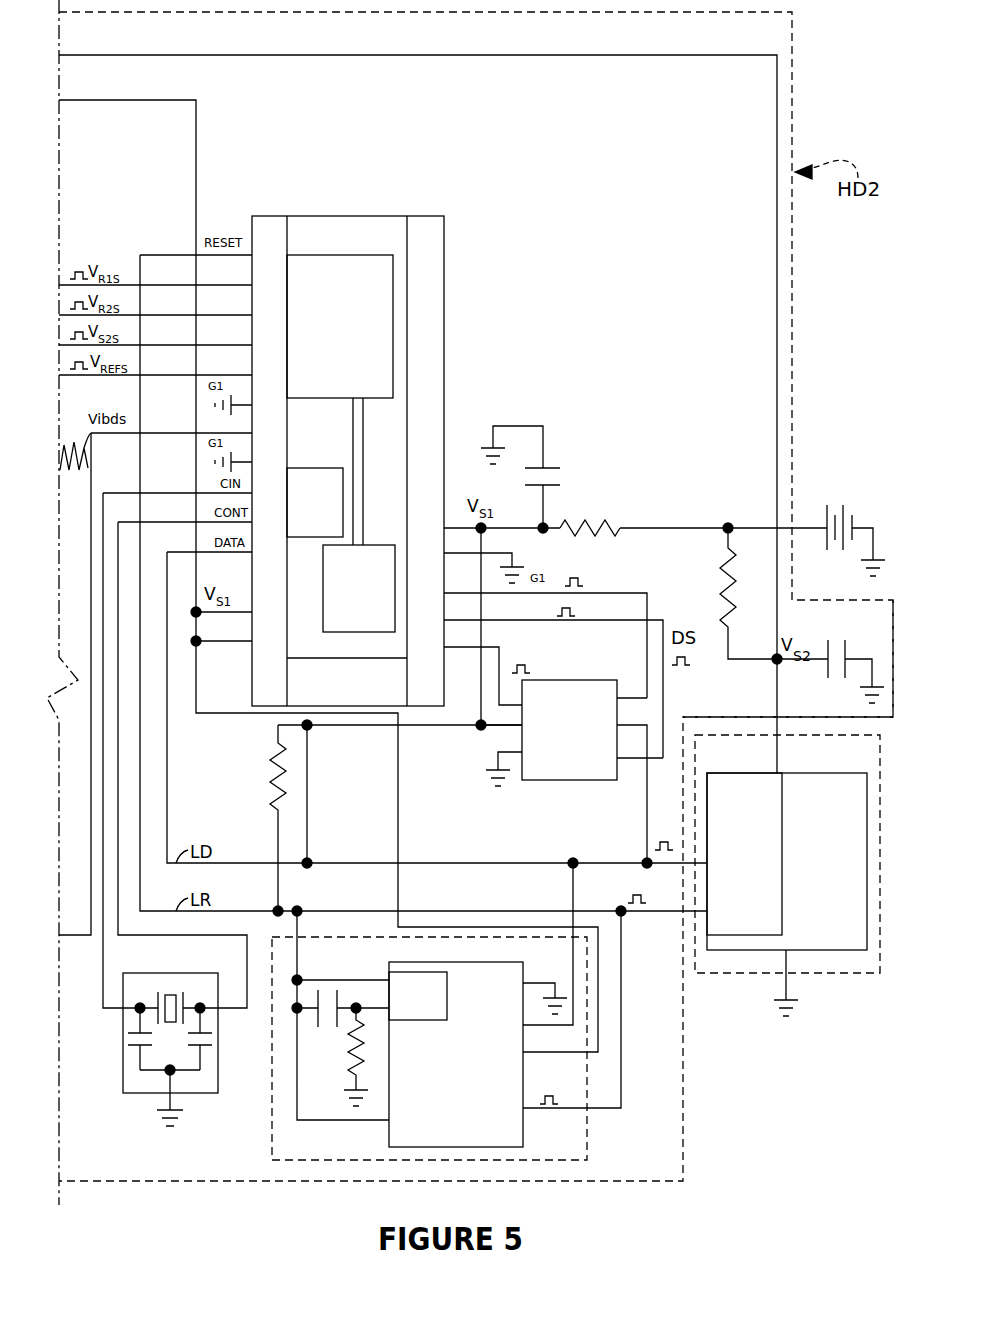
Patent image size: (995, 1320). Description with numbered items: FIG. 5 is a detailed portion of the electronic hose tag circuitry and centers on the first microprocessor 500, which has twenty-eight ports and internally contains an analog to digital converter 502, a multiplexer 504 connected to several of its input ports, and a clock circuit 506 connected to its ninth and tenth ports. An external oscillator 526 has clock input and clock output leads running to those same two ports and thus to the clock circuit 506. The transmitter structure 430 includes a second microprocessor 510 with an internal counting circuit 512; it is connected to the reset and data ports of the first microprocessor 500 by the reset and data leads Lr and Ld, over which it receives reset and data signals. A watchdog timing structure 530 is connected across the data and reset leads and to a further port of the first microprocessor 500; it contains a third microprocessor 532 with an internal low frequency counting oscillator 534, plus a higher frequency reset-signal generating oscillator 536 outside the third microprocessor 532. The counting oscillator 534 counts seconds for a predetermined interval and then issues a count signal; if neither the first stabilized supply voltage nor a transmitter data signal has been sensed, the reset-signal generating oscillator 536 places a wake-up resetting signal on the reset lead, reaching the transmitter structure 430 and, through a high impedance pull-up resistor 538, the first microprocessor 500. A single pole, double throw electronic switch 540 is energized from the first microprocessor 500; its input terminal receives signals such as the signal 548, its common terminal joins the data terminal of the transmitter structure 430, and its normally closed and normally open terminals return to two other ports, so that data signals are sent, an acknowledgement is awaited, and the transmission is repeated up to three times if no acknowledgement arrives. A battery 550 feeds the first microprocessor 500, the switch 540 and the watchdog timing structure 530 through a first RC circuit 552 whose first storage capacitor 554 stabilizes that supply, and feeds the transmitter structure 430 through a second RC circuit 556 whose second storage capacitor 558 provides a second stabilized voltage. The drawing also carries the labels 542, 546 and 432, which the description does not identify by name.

The first microprocessor 500 is at (450, 256).
The analog to digital converter 502 is at (341, 626).
The multiplexer 504 is at (320, 358).
The clock circuit 506 is at (296, 513).
The second microprocessor 510 is at (835, 849).
The counting circuit 512 is at (783, 906).
The oscillator 526 is at (110, 1072).
The watchdog timing structure 530 is at (264, 1145).
The third microprocessor 532 is at (380, 964).
The counting oscillator 534 is at (413, 1021).
The reset-signal generating oscillator 536 is at (322, 1058).
The pull-up resistor 538 is at (278, 790).
The electronic switch 540 is at (512, 736).
The switch 542 is at (557, 781).
The control signal 546 is at (575, 578).
The signal 548 is at (522, 670).
The battery 550 is at (828, 522).
The first RC circuit 552 is at (590, 486).
The first storage capacitor 554 is at (549, 466).
The second RC circuit 556 is at (761, 610).
The second storage capacitor 558 is at (826, 682).
The transmitter structure 430 is at (846, 976).
The power module boundary 432 is at (788, 658).